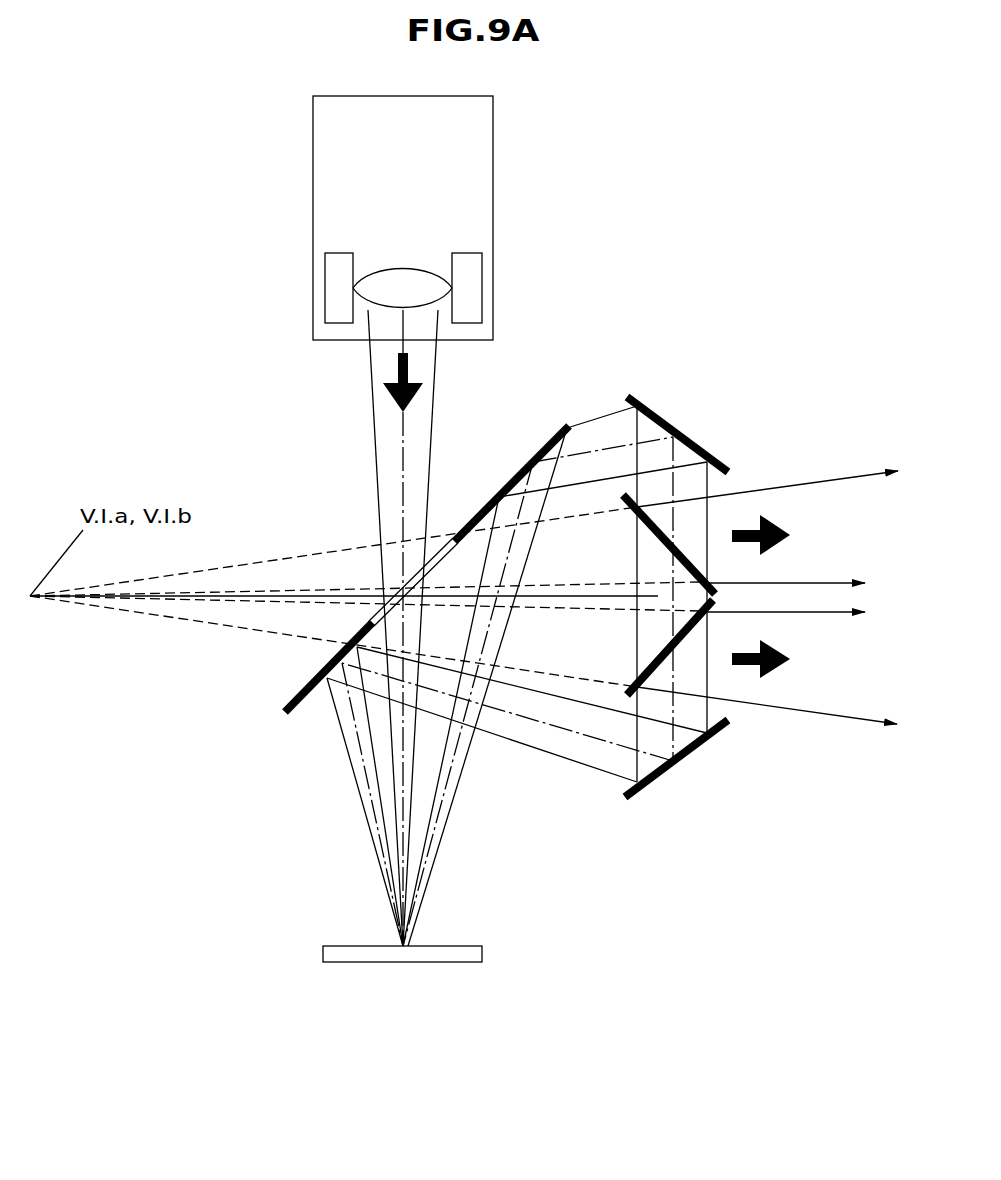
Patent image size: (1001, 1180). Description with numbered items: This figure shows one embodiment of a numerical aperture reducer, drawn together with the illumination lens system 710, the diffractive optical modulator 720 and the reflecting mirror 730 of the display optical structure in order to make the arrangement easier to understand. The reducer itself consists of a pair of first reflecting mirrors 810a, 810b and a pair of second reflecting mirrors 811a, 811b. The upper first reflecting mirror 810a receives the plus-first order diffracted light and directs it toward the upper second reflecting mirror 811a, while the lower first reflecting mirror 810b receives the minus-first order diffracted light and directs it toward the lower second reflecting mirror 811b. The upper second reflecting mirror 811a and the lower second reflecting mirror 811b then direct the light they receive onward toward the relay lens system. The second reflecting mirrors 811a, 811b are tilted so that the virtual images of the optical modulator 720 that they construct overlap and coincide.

The illumination lens system 710 is at (493, 160).
The diffractive optical modulator 720 is at (408, 962).
The reflecting mirror 730 is at (538, 452).
The upper first reflecting mirror 810a is at (670, 422).
The lower first reflecting mirror 810b is at (700, 748).
The upper second reflecting mirror 811a is at (683, 557).
The lower second reflecting mirror 811b is at (687, 630).